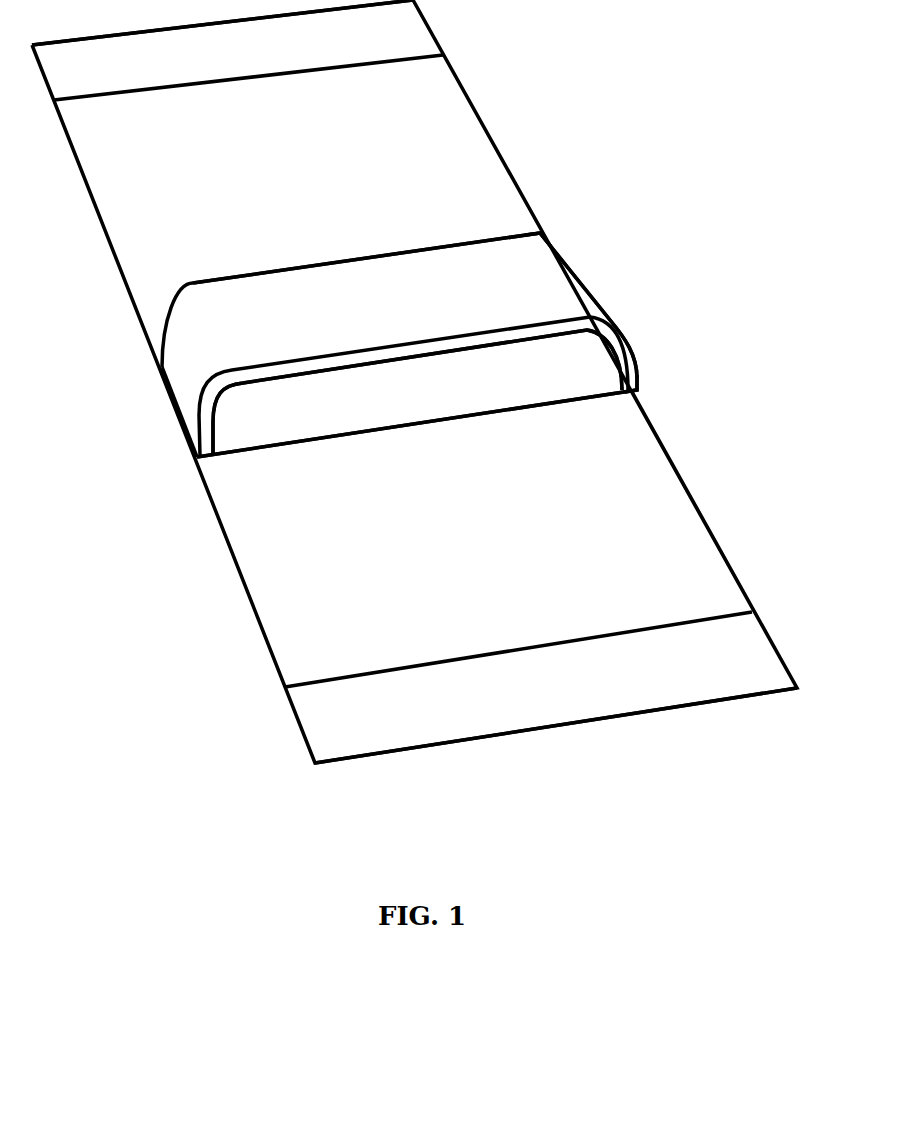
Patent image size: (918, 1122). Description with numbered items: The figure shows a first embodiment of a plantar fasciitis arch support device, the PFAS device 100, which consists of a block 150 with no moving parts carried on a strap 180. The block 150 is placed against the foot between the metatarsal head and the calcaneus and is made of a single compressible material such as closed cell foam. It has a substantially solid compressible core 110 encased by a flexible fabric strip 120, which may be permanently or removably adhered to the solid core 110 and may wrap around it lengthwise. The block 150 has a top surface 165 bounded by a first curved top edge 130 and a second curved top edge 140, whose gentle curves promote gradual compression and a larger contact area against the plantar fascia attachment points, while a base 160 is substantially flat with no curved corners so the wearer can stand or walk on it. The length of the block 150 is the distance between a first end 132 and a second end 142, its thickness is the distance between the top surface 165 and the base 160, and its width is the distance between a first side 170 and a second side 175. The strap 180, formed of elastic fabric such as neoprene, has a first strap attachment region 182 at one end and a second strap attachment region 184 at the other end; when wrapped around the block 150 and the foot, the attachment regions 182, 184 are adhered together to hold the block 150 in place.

The PFAS device 100 is at (168, 633).
The solid core 110 is at (287, 415).
The fabric strip 120 is at (632, 375).
The first curved top edge 130 is at (542, 228).
The first end 132 is at (613, 313).
The second curved top edge 140 is at (182, 283).
The second end 142 is at (175, 410).
The block 150 is at (582, 235).
The base 160 is at (428, 437).
The top surface 165 is at (411, 319).
The first side 170 is at (473, 327).
The second side 175 is at (428, 248).
The strap 180 is at (462, 112).
The first strap attachment region 182 is at (315, 727).
The second strap attachment region 184 is at (418, 27).